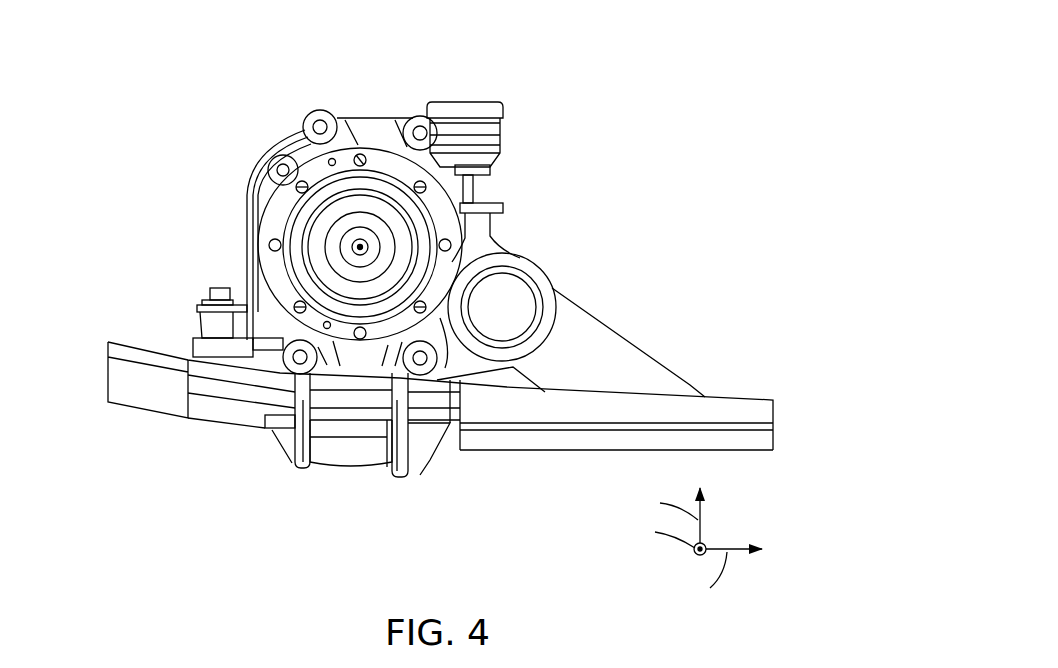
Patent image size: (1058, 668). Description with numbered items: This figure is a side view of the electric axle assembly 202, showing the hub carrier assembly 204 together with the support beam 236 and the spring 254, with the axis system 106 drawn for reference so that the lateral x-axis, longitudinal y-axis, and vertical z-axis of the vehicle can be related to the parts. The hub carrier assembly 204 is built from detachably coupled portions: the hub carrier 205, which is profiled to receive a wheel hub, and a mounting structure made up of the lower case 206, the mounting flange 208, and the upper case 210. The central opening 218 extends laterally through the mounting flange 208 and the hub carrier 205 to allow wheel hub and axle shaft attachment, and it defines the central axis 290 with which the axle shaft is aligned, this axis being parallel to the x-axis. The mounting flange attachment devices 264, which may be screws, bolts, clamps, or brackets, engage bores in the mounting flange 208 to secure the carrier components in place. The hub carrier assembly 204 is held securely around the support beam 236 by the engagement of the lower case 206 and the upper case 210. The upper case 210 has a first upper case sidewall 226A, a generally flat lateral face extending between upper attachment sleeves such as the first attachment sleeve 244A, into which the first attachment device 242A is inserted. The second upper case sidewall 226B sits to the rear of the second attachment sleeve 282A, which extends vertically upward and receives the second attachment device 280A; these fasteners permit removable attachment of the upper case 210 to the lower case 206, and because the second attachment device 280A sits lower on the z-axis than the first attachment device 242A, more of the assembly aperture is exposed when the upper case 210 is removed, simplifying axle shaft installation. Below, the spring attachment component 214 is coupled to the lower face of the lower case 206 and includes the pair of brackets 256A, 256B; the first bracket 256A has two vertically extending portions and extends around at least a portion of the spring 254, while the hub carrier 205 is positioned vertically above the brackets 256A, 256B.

The axis system 106 is at (735, 521).
The electric axle assembly 202 is at (100, 72).
The hub carrier assembly 204 is at (191, 131).
The hub carrier 205 is at (246, 234).
The lower case 206 is at (176, 334).
The mounting flange 208 is at (363, 130).
The upper case 210 is at (266, 127).
The spring attachment component 214 is at (418, 495).
The central opening 218 is at (370, 276).
The first upper case sidewall 226A is at (450, 170).
The second upper case sidewall 226B is at (243, 162).
The support beam 236 is at (637, 363).
The first attachment device 242A is at (483, 198).
The first attachment sleeve 244A is at (482, 227).
The spring 254 is at (200, 405).
The first bracket 256A is at (407, 403).
The second bracket 256B is at (300, 402).
The mounting flange attachment devices 264 is at (318, 112).
The second attachment device 280A is at (218, 293).
The second attachment sleeve 282A is at (213, 318).
The central axis 290 is at (361, 246).